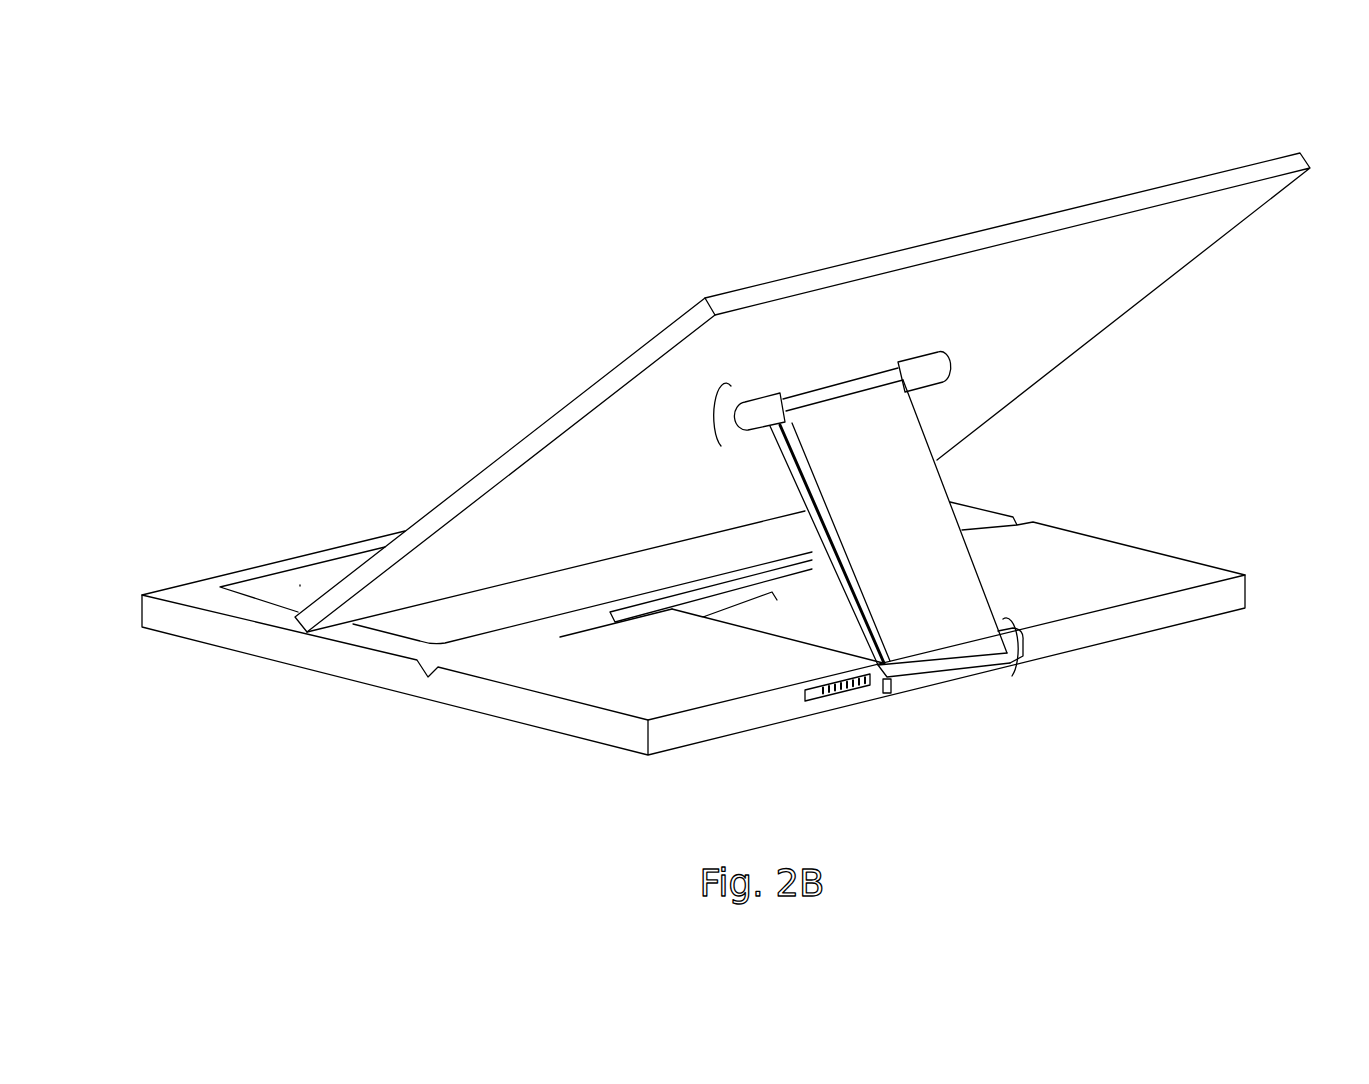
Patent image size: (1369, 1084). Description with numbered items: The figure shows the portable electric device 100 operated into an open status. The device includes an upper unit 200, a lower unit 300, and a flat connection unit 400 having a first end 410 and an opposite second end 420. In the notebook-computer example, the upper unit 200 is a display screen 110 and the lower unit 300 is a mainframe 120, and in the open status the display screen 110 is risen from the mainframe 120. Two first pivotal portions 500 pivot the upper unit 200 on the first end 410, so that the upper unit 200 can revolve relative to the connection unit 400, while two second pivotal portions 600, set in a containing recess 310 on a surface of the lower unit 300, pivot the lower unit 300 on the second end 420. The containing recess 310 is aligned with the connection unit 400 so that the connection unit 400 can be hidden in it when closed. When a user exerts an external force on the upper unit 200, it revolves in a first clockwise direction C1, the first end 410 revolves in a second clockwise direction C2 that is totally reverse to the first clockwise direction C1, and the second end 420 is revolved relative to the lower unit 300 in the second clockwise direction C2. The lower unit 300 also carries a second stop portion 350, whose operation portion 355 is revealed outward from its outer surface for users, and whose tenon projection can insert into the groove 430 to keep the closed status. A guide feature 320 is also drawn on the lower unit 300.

The portable electric device 100 is at (245, 147).
The display screen 110 is at (618, 362).
The mainframe 120 is at (297, 585).
The upper unit 200 is at (1116, 193).
The lower unit 300 is at (1190, 556).
The containing recess 310 is at (825, 604).
The guide groove 320 is at (428, 666).
The second stop portion 350 is at (813, 708).
The operation portion 355 is at (857, 700).
The connection unit 400 is at (950, 475).
The first end 410 is at (835, 388).
The second end 420 is at (950, 656).
The groove 430 is at (823, 630).
The first pivotal portion 500 is at (955, 356).
The second pivotal portion 600 is at (892, 691).
The first clockwise direction C1 is at (1009, 666).
The second clockwise direction C2 is at (715, 434).